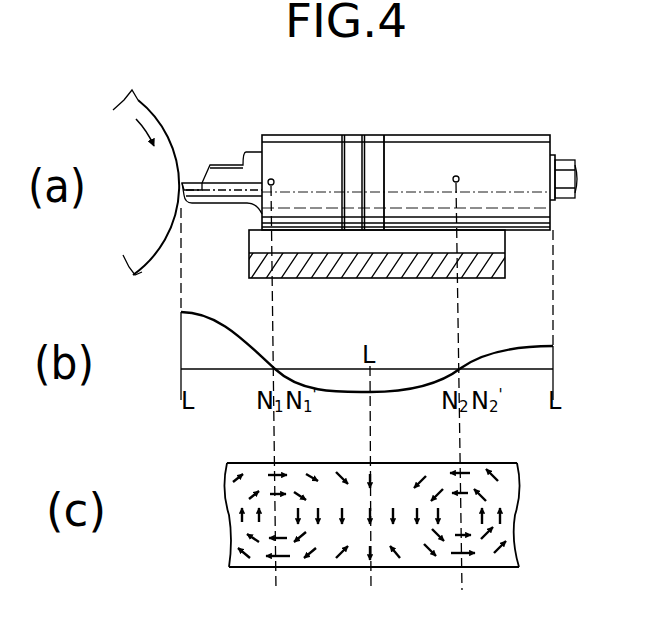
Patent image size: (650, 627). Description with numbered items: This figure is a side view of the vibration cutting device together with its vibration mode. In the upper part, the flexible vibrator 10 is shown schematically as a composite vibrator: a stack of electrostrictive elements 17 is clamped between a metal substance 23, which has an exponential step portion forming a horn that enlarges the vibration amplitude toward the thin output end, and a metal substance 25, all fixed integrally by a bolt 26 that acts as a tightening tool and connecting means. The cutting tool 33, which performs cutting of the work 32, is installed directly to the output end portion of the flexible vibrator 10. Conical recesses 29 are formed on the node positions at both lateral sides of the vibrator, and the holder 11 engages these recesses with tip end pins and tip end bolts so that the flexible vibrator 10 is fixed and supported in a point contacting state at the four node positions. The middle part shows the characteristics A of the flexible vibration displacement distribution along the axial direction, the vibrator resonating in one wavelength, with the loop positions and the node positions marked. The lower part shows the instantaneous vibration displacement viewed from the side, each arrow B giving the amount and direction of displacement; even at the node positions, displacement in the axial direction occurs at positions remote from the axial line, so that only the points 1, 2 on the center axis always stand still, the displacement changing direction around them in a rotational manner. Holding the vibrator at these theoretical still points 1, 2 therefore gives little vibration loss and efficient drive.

The flexible vibrator 10 is at (510, 150).
The holder 11 is at (490, 270).
The electrostrictive element 17 is at (373, 148).
The metal substance 23 is at (250, 177).
The metal substance 25 is at (426, 157).
The bolt 26 is at (572, 165).
The conical recesses 29 is at (271, 178).
The work 32 is at (136, 106).
The cutting tool 33 is at (186, 183).
The characteristics of vibration displacement distribution A is at (528, 345).
The arrow B is at (391, 481).
The point 1 is at (278, 522).
The point 2 is at (464, 518).